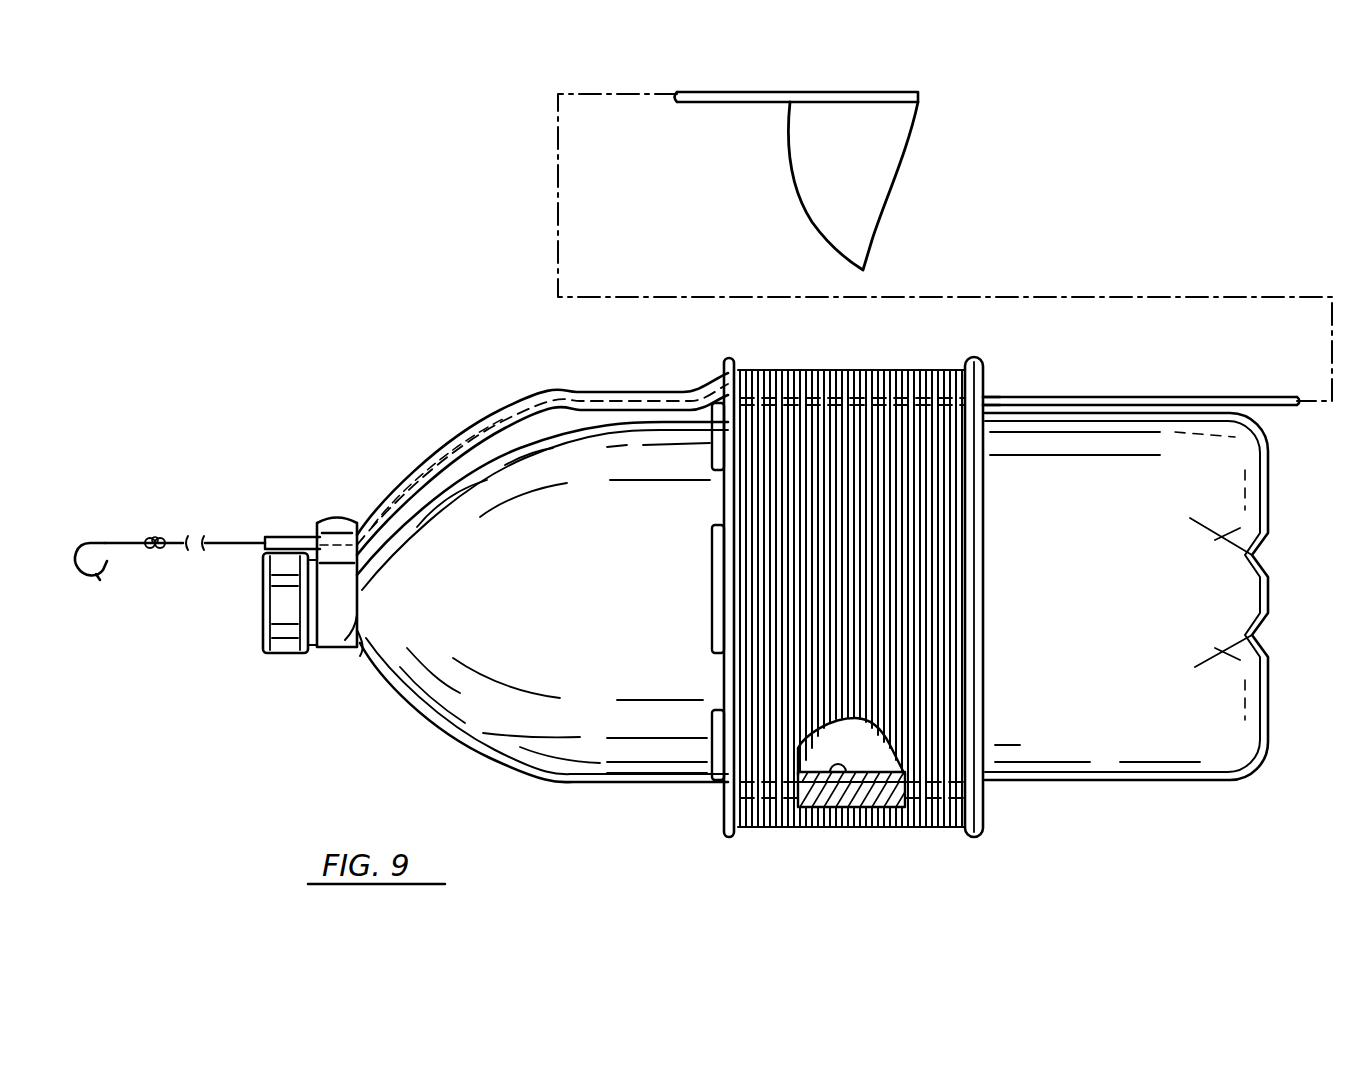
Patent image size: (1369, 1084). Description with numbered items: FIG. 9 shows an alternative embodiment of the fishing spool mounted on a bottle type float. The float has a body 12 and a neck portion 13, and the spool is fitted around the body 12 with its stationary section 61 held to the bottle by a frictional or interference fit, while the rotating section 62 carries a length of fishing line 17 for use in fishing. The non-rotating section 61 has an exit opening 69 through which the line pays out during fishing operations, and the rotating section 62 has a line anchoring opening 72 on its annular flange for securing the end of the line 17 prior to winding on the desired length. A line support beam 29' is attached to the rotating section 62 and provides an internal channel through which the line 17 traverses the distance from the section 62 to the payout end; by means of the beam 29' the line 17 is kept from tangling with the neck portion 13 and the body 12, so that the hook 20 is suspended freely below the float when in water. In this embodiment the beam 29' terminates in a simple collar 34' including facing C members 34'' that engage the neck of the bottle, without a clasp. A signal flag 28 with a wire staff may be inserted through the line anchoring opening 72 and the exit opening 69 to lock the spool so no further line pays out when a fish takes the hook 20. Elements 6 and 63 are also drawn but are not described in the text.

The clamp pads 6 is at (712, 572).
The body 12 is at (1130, 782).
The neck portion 13 is at (335, 652).
The fishing line 17 is at (210, 550).
The hook 20 is at (117, 560).
The signal flag 28 is at (730, 105).
The line support beam 29' is at (542, 436).
The collar 34' is at (385, 688).
The facing C members 34'' is at (265, 637).
The stationary section 61 is at (985, 508).
The rotating section 62 is at (852, 812).
The spool flange 63 is at (985, 366).
The exit opening 69 is at (865, 610).
The line anchoring opening 72 is at (988, 403).